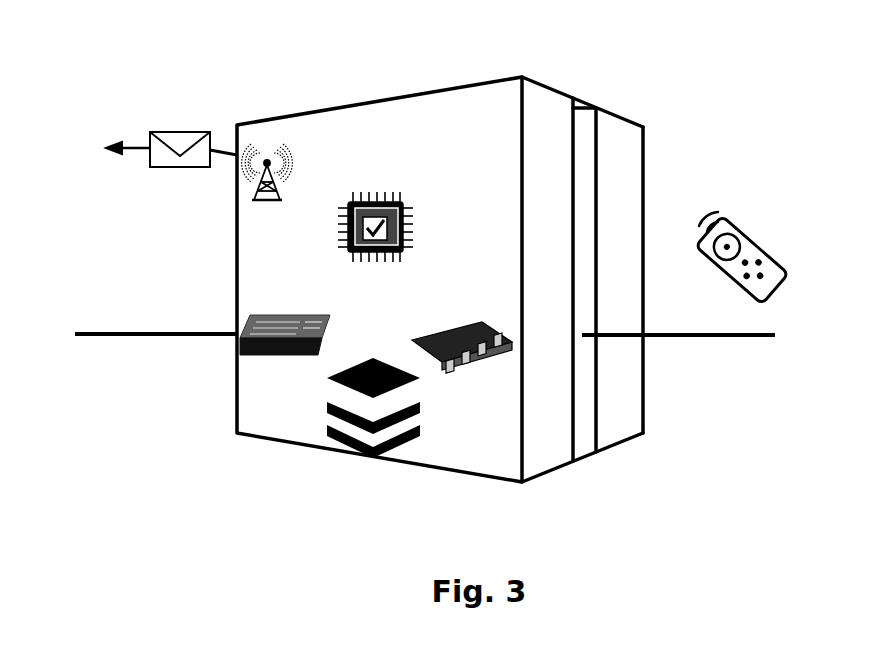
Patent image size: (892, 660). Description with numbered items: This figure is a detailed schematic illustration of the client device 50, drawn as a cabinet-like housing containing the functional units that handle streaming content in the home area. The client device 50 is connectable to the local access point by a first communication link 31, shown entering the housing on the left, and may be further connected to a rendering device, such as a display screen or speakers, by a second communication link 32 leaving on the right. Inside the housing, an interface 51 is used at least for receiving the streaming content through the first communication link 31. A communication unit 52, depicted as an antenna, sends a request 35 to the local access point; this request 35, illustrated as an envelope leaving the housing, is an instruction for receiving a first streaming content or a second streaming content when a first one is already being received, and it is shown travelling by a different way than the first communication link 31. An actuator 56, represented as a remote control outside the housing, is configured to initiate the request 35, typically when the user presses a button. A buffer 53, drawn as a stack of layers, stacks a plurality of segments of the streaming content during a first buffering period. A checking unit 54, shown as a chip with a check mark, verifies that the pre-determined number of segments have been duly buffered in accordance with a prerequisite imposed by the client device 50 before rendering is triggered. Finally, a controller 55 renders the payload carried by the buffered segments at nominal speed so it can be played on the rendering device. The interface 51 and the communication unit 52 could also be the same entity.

The client device 50 is at (432, 115).
The first communication link 31 is at (148, 337).
The second communication link 32 is at (700, 340).
The request 35 is at (188, 130).
The interface 51 is at (282, 318).
The communication unit 52 is at (247, 187).
The buffer 53 is at (357, 437).
The checking unit 54 is at (388, 198).
The controller 55 is at (467, 360).
The actuator 56 is at (760, 240).